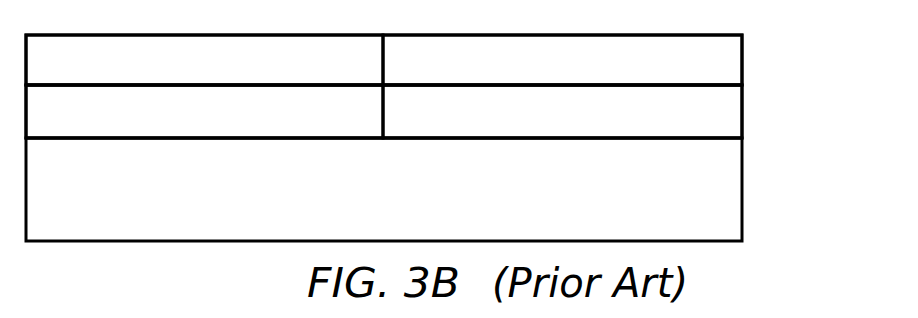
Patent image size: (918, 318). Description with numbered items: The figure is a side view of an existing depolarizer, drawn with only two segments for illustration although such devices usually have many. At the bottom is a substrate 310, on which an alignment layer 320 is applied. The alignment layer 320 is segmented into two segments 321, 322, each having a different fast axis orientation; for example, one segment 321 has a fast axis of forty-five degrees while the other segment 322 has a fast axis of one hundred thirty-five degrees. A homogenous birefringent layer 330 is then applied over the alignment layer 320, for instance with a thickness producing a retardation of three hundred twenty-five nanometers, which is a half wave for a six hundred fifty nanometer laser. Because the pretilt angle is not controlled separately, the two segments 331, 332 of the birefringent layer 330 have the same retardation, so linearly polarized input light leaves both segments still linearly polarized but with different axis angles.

The substrate 310 is at (742, 192).
The alignment layer 320 is at (742, 113).
The segment 321 is at (220, 128).
The segment 322 is at (575, 129).
The homogenous birefringent layer 330 is at (742, 55).
The segment 331 is at (220, 72).
The segment 332 is at (575, 71).